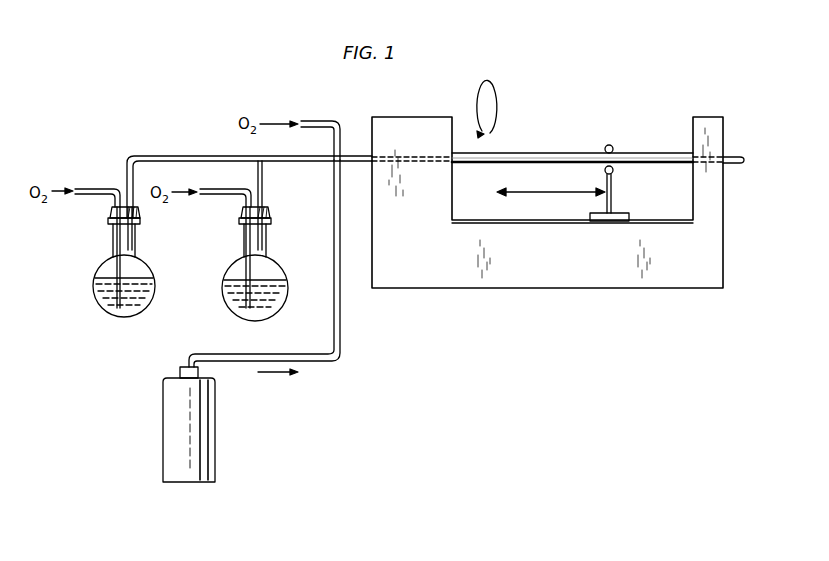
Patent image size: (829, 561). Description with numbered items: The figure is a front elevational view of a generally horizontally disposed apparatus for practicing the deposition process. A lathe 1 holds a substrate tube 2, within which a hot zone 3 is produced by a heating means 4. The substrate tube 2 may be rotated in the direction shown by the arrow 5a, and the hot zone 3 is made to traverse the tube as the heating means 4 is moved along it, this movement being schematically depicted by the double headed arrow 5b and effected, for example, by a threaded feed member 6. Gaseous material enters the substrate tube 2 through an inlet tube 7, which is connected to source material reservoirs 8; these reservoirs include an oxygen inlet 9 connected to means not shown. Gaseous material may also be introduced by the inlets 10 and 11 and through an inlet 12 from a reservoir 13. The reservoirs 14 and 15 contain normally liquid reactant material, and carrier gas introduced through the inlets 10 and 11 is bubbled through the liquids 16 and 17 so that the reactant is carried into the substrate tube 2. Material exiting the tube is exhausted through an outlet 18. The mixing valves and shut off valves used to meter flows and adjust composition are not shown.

The lathe 1 is at (412, 122).
The substrate tube 2 is at (538, 154).
The hot zone 3 is at (611, 145).
The heating means 4 is at (615, 214).
The arrow indicating rotation 5a is at (490, 132).
The double headed arrow 5b is at (551, 183).
The threaded feed member 6 is at (565, 224).
The inlet tube 7 is at (430, 165).
The source material reservoirs 8 is at (180, 142).
The oxygen inlet 9 is at (339, 134).
The inlet 10 is at (97, 186).
The inlet 11 is at (210, 200).
The inlet 12 is at (334, 216).
The reservoir 13 is at (173, 430).
The reservoir 14 is at (118, 318).
The reservoir 15 is at (281, 310).
The liquid 16 is at (93, 288).
The liquid 17 is at (224, 290).
The outlet 18 is at (737, 158).